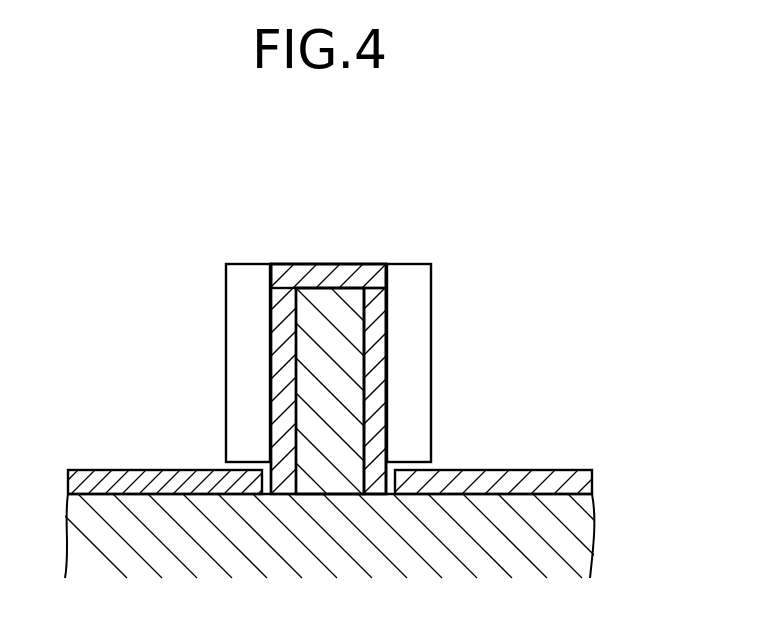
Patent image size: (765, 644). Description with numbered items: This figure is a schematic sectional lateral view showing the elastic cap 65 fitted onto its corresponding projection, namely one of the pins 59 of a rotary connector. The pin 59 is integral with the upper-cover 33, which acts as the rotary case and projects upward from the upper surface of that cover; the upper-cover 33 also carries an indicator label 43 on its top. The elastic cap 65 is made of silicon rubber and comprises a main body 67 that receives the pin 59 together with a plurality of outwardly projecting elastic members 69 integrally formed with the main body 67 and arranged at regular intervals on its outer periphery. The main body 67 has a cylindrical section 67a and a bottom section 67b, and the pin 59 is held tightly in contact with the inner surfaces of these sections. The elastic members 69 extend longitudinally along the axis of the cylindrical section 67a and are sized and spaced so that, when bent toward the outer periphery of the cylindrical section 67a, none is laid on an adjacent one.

The upper-cover 33 is at (138, 484).
The indicator label 43 is at (522, 468).
The pin 59 is at (305, 333).
The elastic cap 65 is at (298, 256).
The main body 67 is at (377, 264).
The cylindrical section 67a is at (376, 338).
The bottom section 67b is at (322, 268).
The elastic member 69 is at (245, 286).